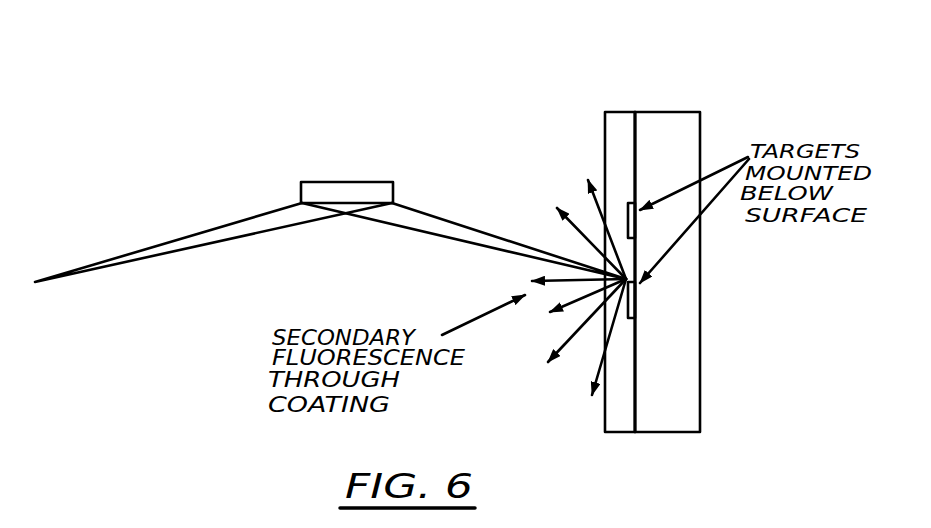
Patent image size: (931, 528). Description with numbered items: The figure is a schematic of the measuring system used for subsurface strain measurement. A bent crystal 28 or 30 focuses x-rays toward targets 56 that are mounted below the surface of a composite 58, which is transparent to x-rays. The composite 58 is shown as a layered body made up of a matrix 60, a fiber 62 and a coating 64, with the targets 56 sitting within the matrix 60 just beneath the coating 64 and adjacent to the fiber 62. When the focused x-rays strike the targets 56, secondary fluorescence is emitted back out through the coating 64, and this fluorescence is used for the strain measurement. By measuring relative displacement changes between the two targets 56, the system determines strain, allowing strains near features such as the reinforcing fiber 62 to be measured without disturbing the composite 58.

The bent crystal 28 is at (330, 216).
The bent crystal 30 is at (393, 195).
The targets 56 is at (637, 203).
The composite 58 is at (700, 107).
The matrix 60 is at (680, 112).
The fiber 62 is at (669, 71).
The coating 64 is at (620, 118).